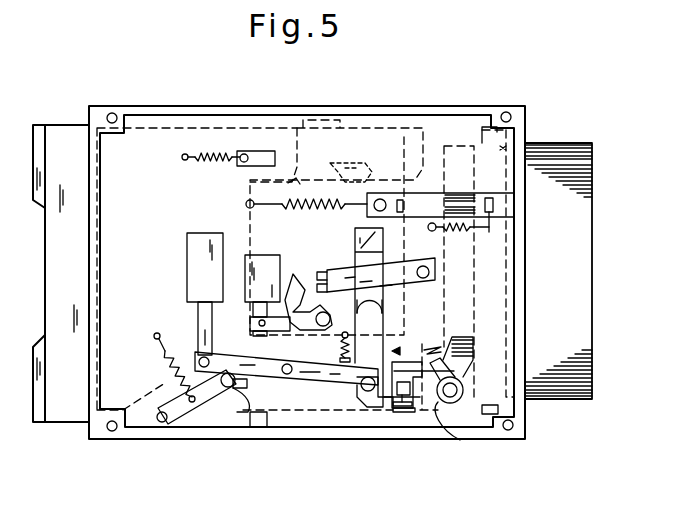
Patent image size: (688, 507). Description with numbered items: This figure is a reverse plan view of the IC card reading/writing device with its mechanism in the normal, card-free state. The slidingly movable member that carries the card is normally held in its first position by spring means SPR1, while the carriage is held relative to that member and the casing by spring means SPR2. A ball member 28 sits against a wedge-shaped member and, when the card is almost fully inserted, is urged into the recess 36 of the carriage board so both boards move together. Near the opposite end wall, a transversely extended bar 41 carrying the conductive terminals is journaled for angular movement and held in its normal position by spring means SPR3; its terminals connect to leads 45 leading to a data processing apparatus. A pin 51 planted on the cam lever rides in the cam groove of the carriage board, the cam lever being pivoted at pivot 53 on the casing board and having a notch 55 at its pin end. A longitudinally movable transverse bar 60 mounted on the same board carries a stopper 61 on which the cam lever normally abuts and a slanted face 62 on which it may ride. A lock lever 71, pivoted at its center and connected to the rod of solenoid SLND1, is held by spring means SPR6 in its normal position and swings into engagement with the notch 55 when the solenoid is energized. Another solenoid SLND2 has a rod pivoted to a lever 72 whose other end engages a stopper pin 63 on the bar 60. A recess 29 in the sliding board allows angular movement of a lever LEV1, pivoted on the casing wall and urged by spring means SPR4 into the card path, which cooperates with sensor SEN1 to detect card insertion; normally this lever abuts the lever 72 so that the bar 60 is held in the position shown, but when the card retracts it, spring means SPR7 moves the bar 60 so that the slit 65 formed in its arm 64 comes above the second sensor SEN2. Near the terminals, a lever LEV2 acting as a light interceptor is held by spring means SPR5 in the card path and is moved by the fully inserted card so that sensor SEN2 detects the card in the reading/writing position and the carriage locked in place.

The spring means SPR1 is at (208, 152).
The recess 36 is at (295, 176).
The spring means SPR2 is at (314, 200).
The ball member 28 is at (350, 166).
The notch 55 is at (330, 264).
The pin 51 is at (400, 212).
The transversely extended bar 41 is at (514, 138).
The leads 45 is at (571, 158).
The spring means SPR3 is at (457, 233).
The slanted face 62 is at (440, 259).
The pivot 53 is at (441, 272).
The stopper 61 is at (381, 310).
The spring means SPR7 is at (398, 351).
The transversely extended bar 60 is at (441, 350).
The spring means SPR5 is at (464, 394).
The solenoid SLND2 is at (184, 276).
The solenoid SLND1 is at (286, 281).
The spring means SPR6 is at (296, 318).
The recess 29 is at (240, 406).
The spring means SPR4 is at (172, 372).
The lever LEV1 is at (173, 419).
The sensor SEN1 is at (258, 427).
The lever 72 is at (267, 372).
The lock lever 71 is at (328, 392).
The stopper pin 63 is at (367, 392).
The arm 64 is at (400, 412).
The slit 65 is at (412, 410).
The second sensor SEN2 is at (416, 413).
The lever LEV2 is at (458, 420).